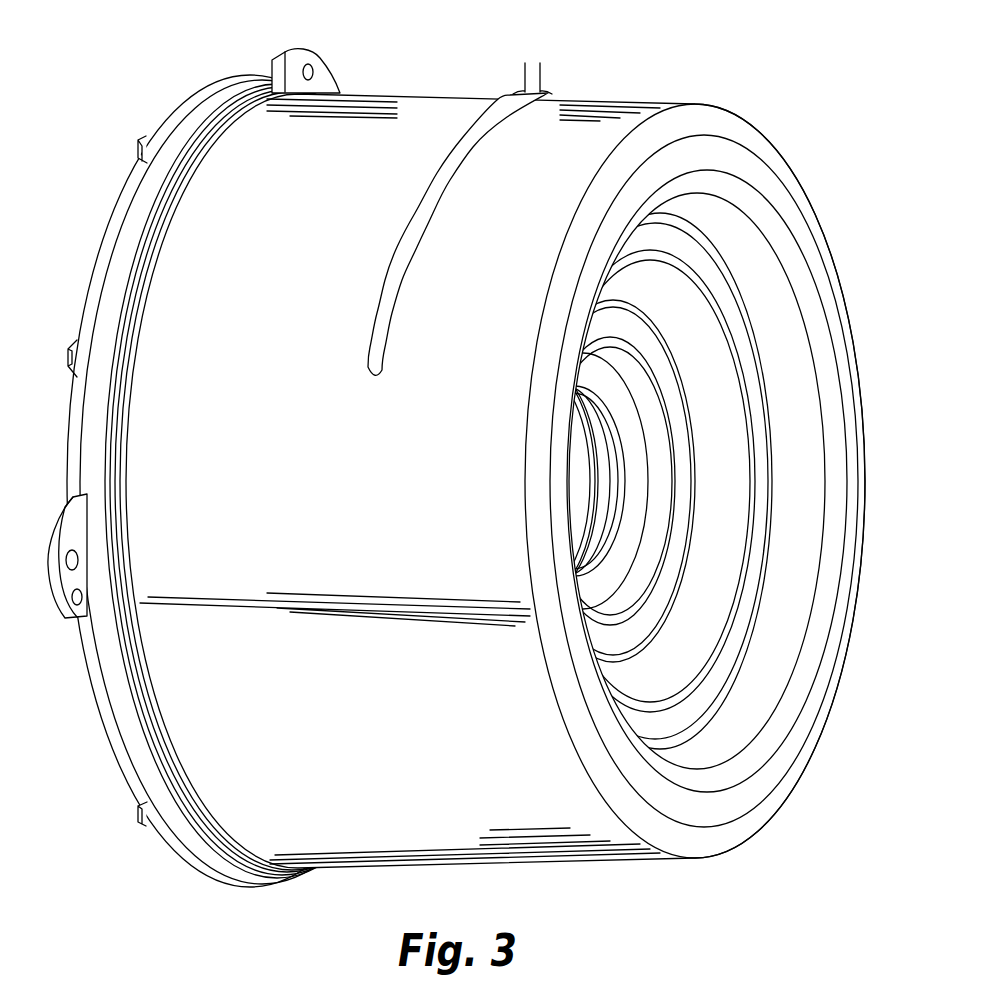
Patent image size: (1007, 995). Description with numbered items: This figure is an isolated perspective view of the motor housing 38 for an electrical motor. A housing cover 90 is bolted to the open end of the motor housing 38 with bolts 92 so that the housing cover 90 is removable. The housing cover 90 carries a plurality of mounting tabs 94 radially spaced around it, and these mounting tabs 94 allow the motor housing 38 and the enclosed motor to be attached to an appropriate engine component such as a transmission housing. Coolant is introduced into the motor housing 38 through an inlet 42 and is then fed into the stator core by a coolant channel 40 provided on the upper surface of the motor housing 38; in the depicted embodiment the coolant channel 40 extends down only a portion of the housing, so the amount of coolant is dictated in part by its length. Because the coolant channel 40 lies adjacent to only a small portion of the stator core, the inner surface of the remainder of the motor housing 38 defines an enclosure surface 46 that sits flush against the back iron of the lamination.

The motor housing 38 is at (631, 84).
The coolant channel 40 is at (458, 122).
The inlet 42 is at (543, 74).
The enclosure surface 46 is at (353, 153).
The housing cover 90 is at (91, 268).
The bolts 92 is at (139, 143).
The mounting tabs 94 is at (54, 524).